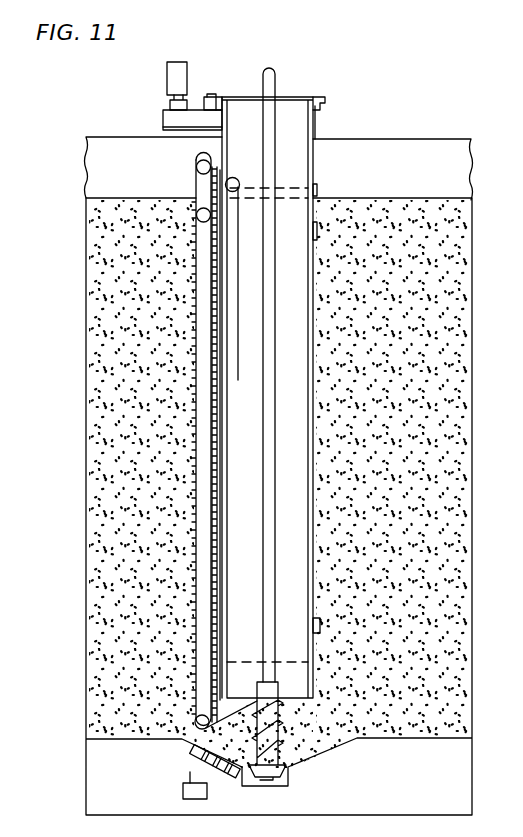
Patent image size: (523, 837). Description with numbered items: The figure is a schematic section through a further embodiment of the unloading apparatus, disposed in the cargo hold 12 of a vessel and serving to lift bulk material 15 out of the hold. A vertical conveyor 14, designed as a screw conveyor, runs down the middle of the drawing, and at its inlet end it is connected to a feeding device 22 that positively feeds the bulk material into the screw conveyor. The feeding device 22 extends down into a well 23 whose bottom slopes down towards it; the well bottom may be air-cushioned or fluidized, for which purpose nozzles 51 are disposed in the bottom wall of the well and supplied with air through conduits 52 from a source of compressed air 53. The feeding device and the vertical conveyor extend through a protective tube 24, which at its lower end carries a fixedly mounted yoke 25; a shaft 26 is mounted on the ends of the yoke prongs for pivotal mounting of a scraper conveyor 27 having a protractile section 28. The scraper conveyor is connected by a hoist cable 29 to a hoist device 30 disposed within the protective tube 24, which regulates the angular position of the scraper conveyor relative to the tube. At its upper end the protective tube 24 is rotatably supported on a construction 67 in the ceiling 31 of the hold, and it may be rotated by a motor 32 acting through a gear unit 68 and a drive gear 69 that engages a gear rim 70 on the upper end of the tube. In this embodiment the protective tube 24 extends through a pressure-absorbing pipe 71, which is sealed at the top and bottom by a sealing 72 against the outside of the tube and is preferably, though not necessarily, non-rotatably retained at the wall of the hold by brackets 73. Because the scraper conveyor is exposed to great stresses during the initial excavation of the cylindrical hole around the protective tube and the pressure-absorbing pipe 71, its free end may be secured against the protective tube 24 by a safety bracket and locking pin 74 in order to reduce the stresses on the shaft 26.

The cargo hold 12 is at (112, 740).
The vertical conveyor 14 is at (262, 488).
The bulk material 15 is at (97, 520).
The feeding device 22 is at (279, 712).
The well 23 is at (338, 745).
The protective tube 24 is at (313, 687).
The yoke 25 is at (235, 702).
The shaft 26 is at (194, 720).
The scraper conveyor 27 is at (192, 344).
The protractile section 28 is at (195, 176).
The hoist cable 29 is at (246, 232).
The hoist device 30 is at (240, 183).
The ceiling 31 is at (388, 139).
The motor 32 is at (166, 75).
The nozzles 51 is at (228, 776).
The conduits 52 is at (190, 772).
The source of compressed air 53 is at (183, 790).
The construction 67 is at (320, 120).
The gear unit 68 is at (163, 123).
The drive gear 69 is at (210, 97).
The gear rim 70 is at (326, 103).
The pressure-absorbing pipe 71 is at (313, 430).
The bracket 72 is at (316, 189).
The brackets 73 is at (320, 232).
The safety bracket and locking pin 74 is at (222, 173).